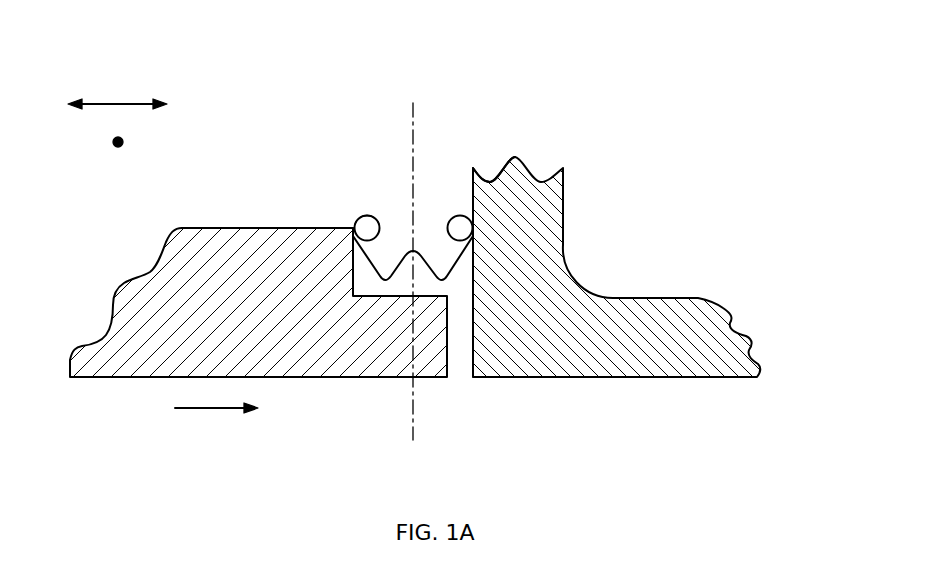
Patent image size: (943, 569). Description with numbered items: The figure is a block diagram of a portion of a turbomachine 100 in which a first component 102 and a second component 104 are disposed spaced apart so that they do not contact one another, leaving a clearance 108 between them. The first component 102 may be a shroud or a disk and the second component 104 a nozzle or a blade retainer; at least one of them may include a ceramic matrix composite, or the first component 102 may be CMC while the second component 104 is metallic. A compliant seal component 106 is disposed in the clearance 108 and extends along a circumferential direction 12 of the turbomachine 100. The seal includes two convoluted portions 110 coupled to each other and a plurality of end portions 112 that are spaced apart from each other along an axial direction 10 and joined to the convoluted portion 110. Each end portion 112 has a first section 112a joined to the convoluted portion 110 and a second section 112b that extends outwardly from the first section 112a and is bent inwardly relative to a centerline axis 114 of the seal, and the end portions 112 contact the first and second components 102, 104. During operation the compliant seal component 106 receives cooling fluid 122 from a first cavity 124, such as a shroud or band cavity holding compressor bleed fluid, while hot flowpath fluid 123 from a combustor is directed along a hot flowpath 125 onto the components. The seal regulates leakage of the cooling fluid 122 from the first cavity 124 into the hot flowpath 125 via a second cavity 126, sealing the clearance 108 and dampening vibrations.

The axial direction 10 is at (120, 103).
The circumferential direction 12 is at (123, 141).
The turbomachine 100 is at (672, 35).
The first component 102 is at (113, 310).
The second component 104 is at (740, 342).
The compliant seal component 106 is at (353, 258).
The clearance 108 is at (423, 275).
The convoluted portion 110 is at (440, 283).
The end portions 112 is at (354, 212).
The first section 112a is at (352, 215).
The second section 112b is at (371, 218).
The centerline axis 114 is at (413, 113).
The cooling fluid 122 is at (432, 245).
The hot flowpath fluid 123 is at (203, 410).
The first cavity 124 is at (445, 158).
The hot flowpath 125 is at (566, 420).
The second cavity 126 is at (458, 335).